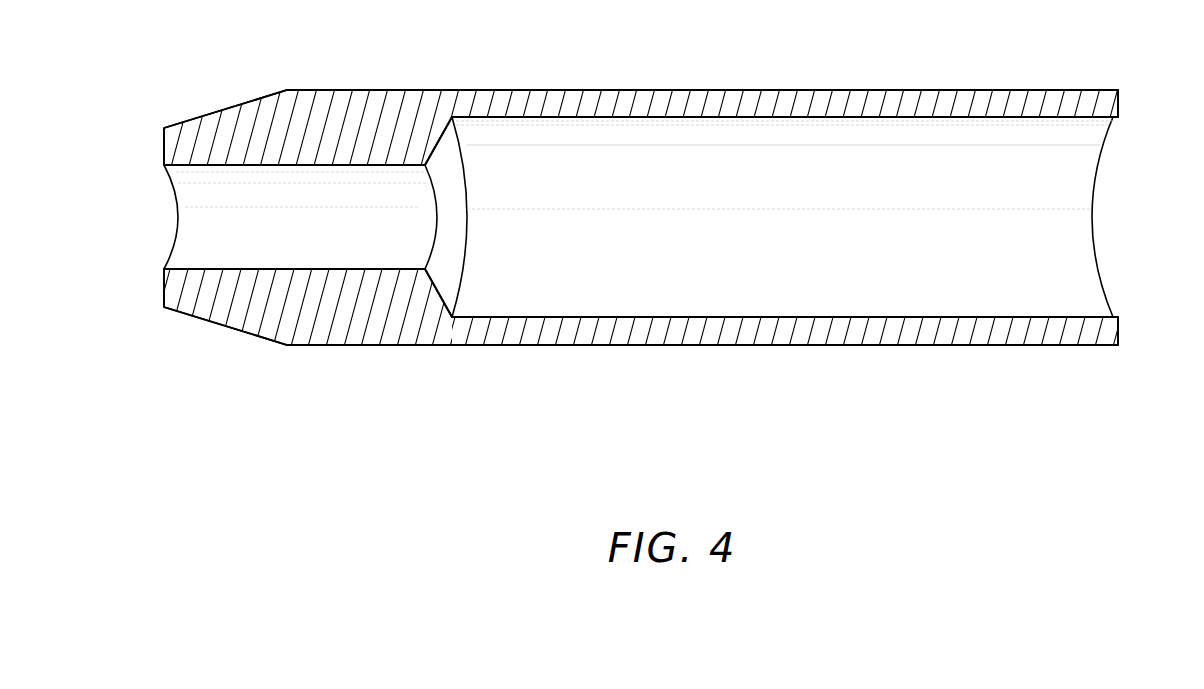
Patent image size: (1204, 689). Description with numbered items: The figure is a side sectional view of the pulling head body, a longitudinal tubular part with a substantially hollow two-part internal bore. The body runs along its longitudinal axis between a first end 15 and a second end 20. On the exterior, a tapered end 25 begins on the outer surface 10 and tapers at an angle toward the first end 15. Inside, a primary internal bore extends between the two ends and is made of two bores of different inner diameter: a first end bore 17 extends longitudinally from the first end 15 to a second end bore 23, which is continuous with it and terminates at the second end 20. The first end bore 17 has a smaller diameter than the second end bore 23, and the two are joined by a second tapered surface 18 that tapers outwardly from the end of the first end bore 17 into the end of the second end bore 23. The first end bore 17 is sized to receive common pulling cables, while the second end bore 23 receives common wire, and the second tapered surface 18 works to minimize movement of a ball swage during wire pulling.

The outer surface 10 is at (773, 90).
The first end 15 is at (163, 147).
The first end bore 17 is at (295, 245).
The second tapered surface 18 is at (437, 153).
The second end 20 is at (1120, 100).
The second end bore 23 is at (560, 275).
The tapered end 25 is at (215, 113).